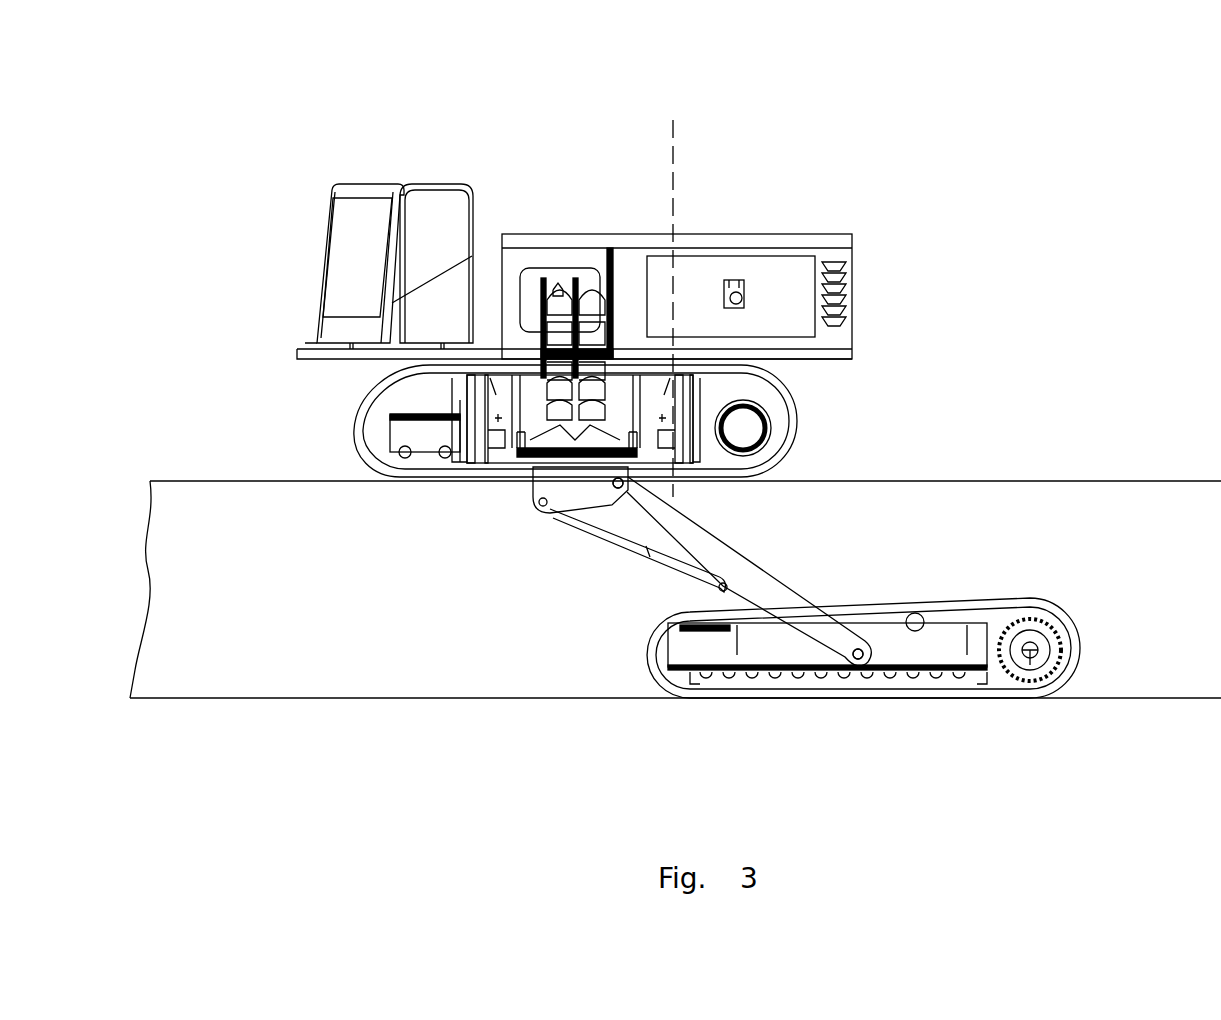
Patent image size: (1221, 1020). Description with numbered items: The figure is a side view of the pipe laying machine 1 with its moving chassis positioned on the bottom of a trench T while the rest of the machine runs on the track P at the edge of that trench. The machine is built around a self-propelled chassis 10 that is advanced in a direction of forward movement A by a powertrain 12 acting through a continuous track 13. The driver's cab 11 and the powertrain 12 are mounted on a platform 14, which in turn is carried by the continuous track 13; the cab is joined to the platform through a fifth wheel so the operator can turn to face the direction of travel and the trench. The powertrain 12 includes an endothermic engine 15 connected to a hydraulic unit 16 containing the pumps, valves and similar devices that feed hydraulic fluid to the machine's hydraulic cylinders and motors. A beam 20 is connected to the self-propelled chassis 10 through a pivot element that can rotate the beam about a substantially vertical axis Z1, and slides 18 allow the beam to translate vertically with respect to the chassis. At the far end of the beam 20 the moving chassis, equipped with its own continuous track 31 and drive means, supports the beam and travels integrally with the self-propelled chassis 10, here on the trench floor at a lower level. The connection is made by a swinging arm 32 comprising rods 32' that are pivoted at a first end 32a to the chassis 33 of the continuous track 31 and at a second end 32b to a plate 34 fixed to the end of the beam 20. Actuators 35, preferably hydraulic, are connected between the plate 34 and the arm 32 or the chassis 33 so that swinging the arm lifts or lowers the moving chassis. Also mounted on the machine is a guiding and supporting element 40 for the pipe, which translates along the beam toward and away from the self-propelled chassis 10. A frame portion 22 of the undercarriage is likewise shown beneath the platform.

The pipe laying machine 1 is at (222, 130).
The self-propelled chassis 10 is at (383, 199).
The driver's cab 11 is at (443, 200).
The powertrain 12 is at (714, 268).
The continuous track 13 is at (800, 420).
The platform 14 is at (303, 352).
The endothermic engine 15 is at (848, 238).
The hydraulic unit 16 is at (563, 245).
The slides 18 is at (475, 385).
The beam 20 is at (592, 445).
The track frame 22 is at (458, 482).
The continuous track 31 is at (863, 633).
The swinging arm 32 is at (706, 613).
The rods 32' is at (749, 571).
The first end 32a is at (845, 652).
The second end 32b is at (628, 497).
The chassis of the continuous track 33 is at (933, 650).
The plate 34 is at (532, 490).
The actuators 35 is at (597, 532).
The guiding and supporting element 40 is at (588, 277).
The direction of forward movement A is at (148, 390).
The track P is at (1053, 481).
The trench T is at (200, 578).
The vertical axis Z1 is at (672, 296).